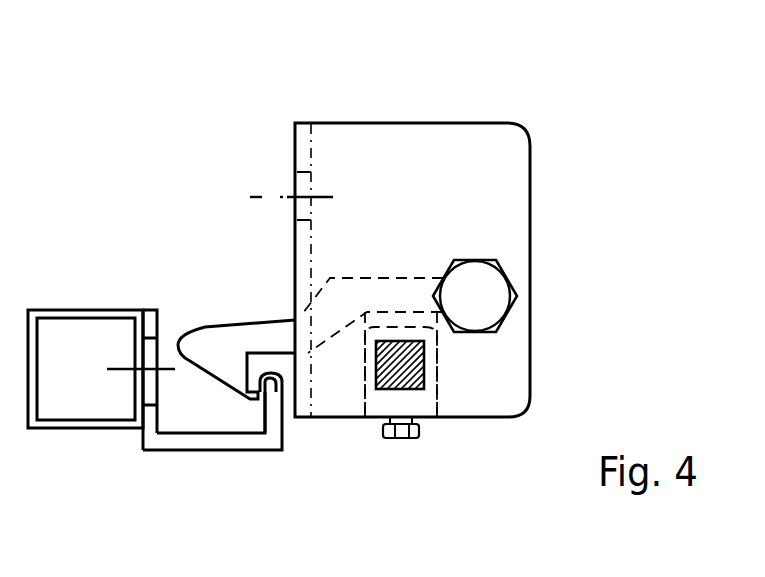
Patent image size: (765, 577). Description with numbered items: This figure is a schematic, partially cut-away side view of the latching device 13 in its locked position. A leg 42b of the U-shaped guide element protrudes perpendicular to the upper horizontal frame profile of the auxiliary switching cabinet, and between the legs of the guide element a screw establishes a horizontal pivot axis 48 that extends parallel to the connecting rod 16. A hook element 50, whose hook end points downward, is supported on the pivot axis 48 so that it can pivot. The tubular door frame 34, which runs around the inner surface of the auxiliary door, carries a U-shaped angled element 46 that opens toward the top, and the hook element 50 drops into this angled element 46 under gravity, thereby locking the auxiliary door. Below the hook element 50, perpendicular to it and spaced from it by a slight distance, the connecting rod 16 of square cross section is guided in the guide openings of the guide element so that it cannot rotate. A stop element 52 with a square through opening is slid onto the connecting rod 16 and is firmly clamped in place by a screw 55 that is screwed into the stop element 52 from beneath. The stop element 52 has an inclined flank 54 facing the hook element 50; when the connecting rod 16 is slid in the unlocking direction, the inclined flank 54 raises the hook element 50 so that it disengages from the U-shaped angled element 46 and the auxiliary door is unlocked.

The fastening arrangement 13 is at (250, 130).
The leg of the U-shaped guide element 42b is at (422, 183).
The inclined flank 54 is at (402, 322).
The stop element 52 is at (421, 401).
The connecting rod 16 is at (397, 390).
The pivot axis 48 is at (475, 293).
The screw 55 is at (406, 438).
The hook element 50 is at (267, 342).
The tubular door frame 34 is at (87, 320).
The U-shaped angled element 46 is at (210, 443).